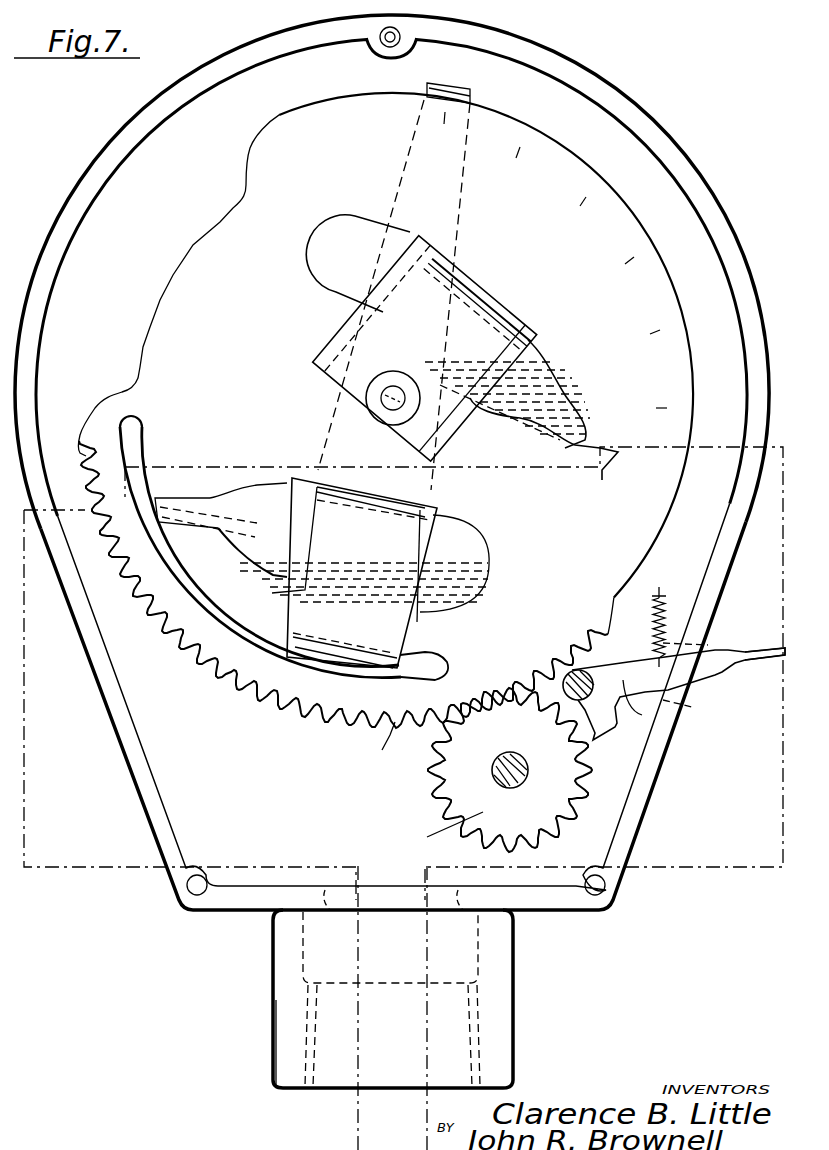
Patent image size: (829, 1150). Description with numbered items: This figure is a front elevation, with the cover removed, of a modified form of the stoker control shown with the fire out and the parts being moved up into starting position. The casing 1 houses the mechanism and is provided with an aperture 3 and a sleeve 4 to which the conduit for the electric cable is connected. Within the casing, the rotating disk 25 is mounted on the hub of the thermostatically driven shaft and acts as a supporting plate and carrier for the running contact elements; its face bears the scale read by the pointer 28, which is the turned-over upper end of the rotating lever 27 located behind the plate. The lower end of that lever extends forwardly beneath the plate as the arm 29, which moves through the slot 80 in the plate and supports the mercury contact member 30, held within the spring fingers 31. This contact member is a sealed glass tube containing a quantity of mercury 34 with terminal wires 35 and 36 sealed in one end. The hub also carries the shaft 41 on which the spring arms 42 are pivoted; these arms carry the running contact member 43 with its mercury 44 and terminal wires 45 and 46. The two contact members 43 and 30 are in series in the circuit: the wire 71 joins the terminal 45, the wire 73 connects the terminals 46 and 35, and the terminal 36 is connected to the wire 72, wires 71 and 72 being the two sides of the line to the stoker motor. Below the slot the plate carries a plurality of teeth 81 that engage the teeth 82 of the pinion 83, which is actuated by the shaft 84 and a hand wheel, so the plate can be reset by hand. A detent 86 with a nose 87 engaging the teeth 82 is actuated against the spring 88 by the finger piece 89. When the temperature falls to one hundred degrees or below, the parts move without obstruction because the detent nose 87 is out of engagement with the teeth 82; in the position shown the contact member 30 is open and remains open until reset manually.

The casing 1 is at (644, 112).
The aperture 3 is at (340, 900).
The sleeve 4 is at (273, 1036).
The rotating disk 25 is at (670, 283).
The rotating lever 27 is at (480, 98).
The pointer 28 is at (452, 90).
The arm 29 is at (290, 647).
The mercury contact member 30 is at (400, 572).
The spring fingers 31 is at (415, 492).
The mercury 34 is at (470, 555).
The terminal wire 35 is at (225, 505).
The terminal wire 36 is at (217, 520).
The shaft 41 is at (375, 392).
The spring arms 42 is at (470, 285).
The running contact member 43 is at (318, 258).
The mercury 44 is at (520, 365).
The terminal wire 45 is at (545, 392).
The terminal wire 46 is at (525, 418).
The wire 71 is at (424, 1120).
The wire 72 is at (356, 1134).
The wire 73 is at (285, 467).
The slot 80 is at (440, 651).
The teeth 81 is at (387, 749).
The teeth 82 is at (430, 798).
The pinion 83 is at (439, 829).
The shaft 84 is at (518, 773).
The detent 86 is at (632, 680).
The nose 87 is at (602, 735).
The spring 88 is at (690, 583).
The finger piece 89 is at (755, 645).